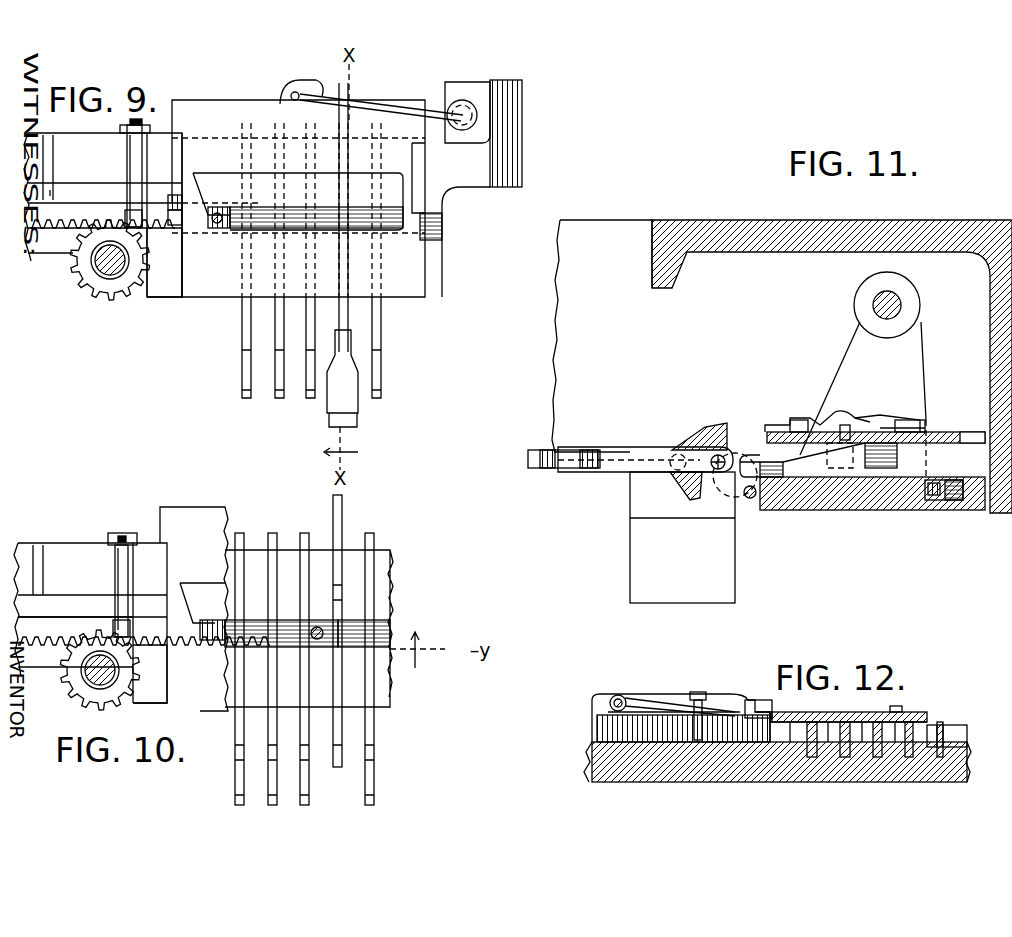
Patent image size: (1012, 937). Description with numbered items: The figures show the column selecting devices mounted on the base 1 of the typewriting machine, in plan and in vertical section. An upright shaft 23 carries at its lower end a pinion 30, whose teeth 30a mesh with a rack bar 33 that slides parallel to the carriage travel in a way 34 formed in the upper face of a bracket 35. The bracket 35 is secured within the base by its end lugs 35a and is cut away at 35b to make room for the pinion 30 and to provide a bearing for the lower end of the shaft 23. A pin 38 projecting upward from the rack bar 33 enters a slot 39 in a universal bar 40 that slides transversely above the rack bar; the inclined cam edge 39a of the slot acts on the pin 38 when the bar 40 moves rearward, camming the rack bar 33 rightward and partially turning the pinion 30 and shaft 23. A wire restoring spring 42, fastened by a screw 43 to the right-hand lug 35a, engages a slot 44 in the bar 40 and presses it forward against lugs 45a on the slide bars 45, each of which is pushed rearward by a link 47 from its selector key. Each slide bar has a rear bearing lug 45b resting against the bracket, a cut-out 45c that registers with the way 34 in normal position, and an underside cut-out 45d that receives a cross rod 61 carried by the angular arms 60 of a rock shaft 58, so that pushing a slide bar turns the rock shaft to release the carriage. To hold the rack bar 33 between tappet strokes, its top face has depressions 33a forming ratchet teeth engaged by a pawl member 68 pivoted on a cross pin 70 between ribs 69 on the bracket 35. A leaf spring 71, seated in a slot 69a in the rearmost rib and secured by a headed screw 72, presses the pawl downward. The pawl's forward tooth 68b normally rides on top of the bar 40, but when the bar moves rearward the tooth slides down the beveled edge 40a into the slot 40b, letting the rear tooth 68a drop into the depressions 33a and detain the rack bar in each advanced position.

In FIG. 11, the base 1 is at (770, 224).
In FIG. 9, the upright rotatory shaft 23 is at (98, 262).
In FIG. 10, the upright rotatory shaft 23 is at (88, 672).
In FIG. 9, the pinion 30 is at (90, 285).
In FIG. 9, the pinion teeth 30a is at (106, 290).
In FIG. 10, the pinion teeth 30a is at (98, 690).
In FIG. 9, the rack bar 33 is at (30, 228).
In FIG. 10, the rack bar 33 is at (255, 622).
In FIG. 11, the rack bar 33 is at (827, 455).
In FIG. 12, the rack bar 33 is at (860, 722).
In FIG. 10, the cut-aways or depressions 33a is at (218, 625).
In FIG. 12, the cut-aways or depressions 33a is at (808, 745).
In FIG. 9, the way or track 34 is at (440, 240).
In FIG. 10, the way or track 34 is at (390, 628).
In FIG. 9, the support or bracket 35 is at (445, 200).
In FIG. 10, the support or bracket 35 is at (80, 548).
In FIG. 11, the support or bracket 35 is at (778, 432).
In FIG. 12, the support or bracket 35 is at (930, 775).
In FIG. 9, the lugs or ears 35a is at (522, 142).
In FIG. 12, the lugs or ears 35a is at (586, 752).
In FIG. 9, the cut-away 35b is at (150, 270).
In FIG. 10, the cut-away 35b is at (130, 690).
In FIG. 9, the pin or lug 38 is at (219, 226).
In FIG. 10, the pin or lug 38 is at (317, 640).
In FIG. 11, the pin or lug 38 is at (845, 425).
In FIG. 12, the pin or lug 38 is at (897, 708).
In FIG. 9, the cut-out or slot 39 is at (290, 178).
In FIG. 10, the cut-out or slot 39 is at (193, 583).
In FIG. 11, the cut-out or slot 39 is at (893, 430).
In FIG. 9, the inclined or cam edge 39a is at (215, 200).
In FIG. 9, the universal bar 40 is at (218, 100).
In FIG. 10, the universal bar 40 is at (226, 517).
In FIG. 11, the universal bar 40 is at (945, 433).
In FIG. 12, the universal bar 40 is at (823, 712).
In FIG. 9, the beveled rear edge 40a is at (182, 200).
In FIG. 9, the slot 40b is at (185, 222).
In FIG. 9, the wire restoring spring 42 is at (395, 106).
In FIG. 9, the screw 43 is at (464, 131).
In FIG. 9, the slot 44 is at (290, 94).
In FIG. 9, the slide bars 45 is at (353, 93).
In FIG. 10, the slide bars 45 is at (300, 767).
In FIG. 11, the slide bars 45 is at (812, 510).
In FIG. 11, the lugs or projections 45a is at (735, 425).
In FIG. 11, the bearing lug 45b is at (968, 490).
In FIG. 10, the cut-out 45c is at (337, 580).
In FIG. 11, the cut-out 45c is at (870, 470).
In FIG. 11, the cut-outs 45d is at (775, 480).
In FIG. 11, the adjustable link 47 is at (590, 470).
In FIG. 11, the rock shaft 58 is at (903, 306).
In FIG. 11, the angular arms 60 is at (925, 390).
In FIG. 11, the cross rod or bar 61 is at (718, 470).
In FIG. 9, the detent or pawl member 68 is at (108, 210).
In FIG. 10, the detent or pawl member 68 is at (62, 617).
In FIG. 12, the detent or pawl member 68 is at (672, 700).
In FIG. 11, the rear tooth 68a is at (870, 415).
In FIG. 12, the rear tooth 68a is at (735, 700).
In FIG. 11, the forward tooth 68b is at (812, 420).
In FIG. 12, the forward tooth 68b is at (760, 712).
In FIG. 9, the ribs 69 is at (65, 190).
In FIG. 10, the ribs 69 is at (150, 600).
In FIG. 11, the ribs 69 is at (808, 420).
In FIG. 12, the ribs 69 is at (650, 694).
In FIG. 9, the cut-out or slot 69a is at (128, 148).
In FIG. 10, the cut-out or slot 69a is at (115, 582).
In FIG. 9, the cross pin 70 is at (58, 194).
In FIG. 12, the cross pin 70 is at (617, 695).
In FIG. 9, the leaf spring 71 is at (136, 160).
In FIG. 10, the leaf spring 71 is at (126, 567).
In FIG. 12, the leaf spring 71 is at (698, 692).
In FIG. 9, the headed screw 72 is at (142, 128).
In FIG. 10, the headed screw 72 is at (124, 535).
In FIG. 11, the headed screw 72 is at (933, 500).